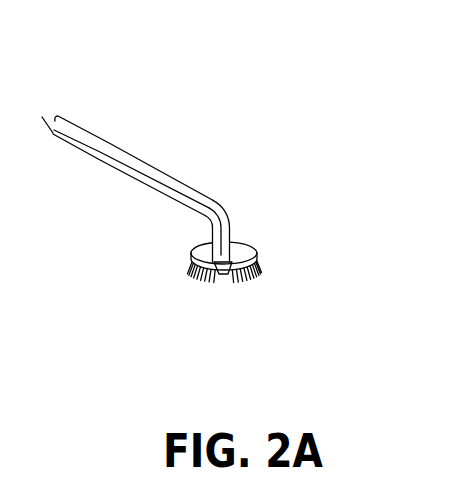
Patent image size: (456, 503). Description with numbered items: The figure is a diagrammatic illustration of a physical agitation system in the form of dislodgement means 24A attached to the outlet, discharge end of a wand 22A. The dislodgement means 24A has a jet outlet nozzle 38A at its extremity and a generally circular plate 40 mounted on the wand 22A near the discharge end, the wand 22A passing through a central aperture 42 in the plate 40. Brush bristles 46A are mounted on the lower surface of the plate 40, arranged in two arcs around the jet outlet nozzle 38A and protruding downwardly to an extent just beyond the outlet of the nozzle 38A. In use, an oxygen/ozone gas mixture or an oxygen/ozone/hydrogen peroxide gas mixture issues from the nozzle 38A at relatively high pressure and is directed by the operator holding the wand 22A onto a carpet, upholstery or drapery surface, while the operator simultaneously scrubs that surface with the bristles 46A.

The wand 22A is at (107, 146).
The central aperture 42 is at (240, 243).
The dislodgement means 24A is at (288, 205).
The generally circular plate 40 is at (243, 252).
The brush bristles 46A is at (252, 272).
The jet outlet nozzle 38A is at (225, 283).